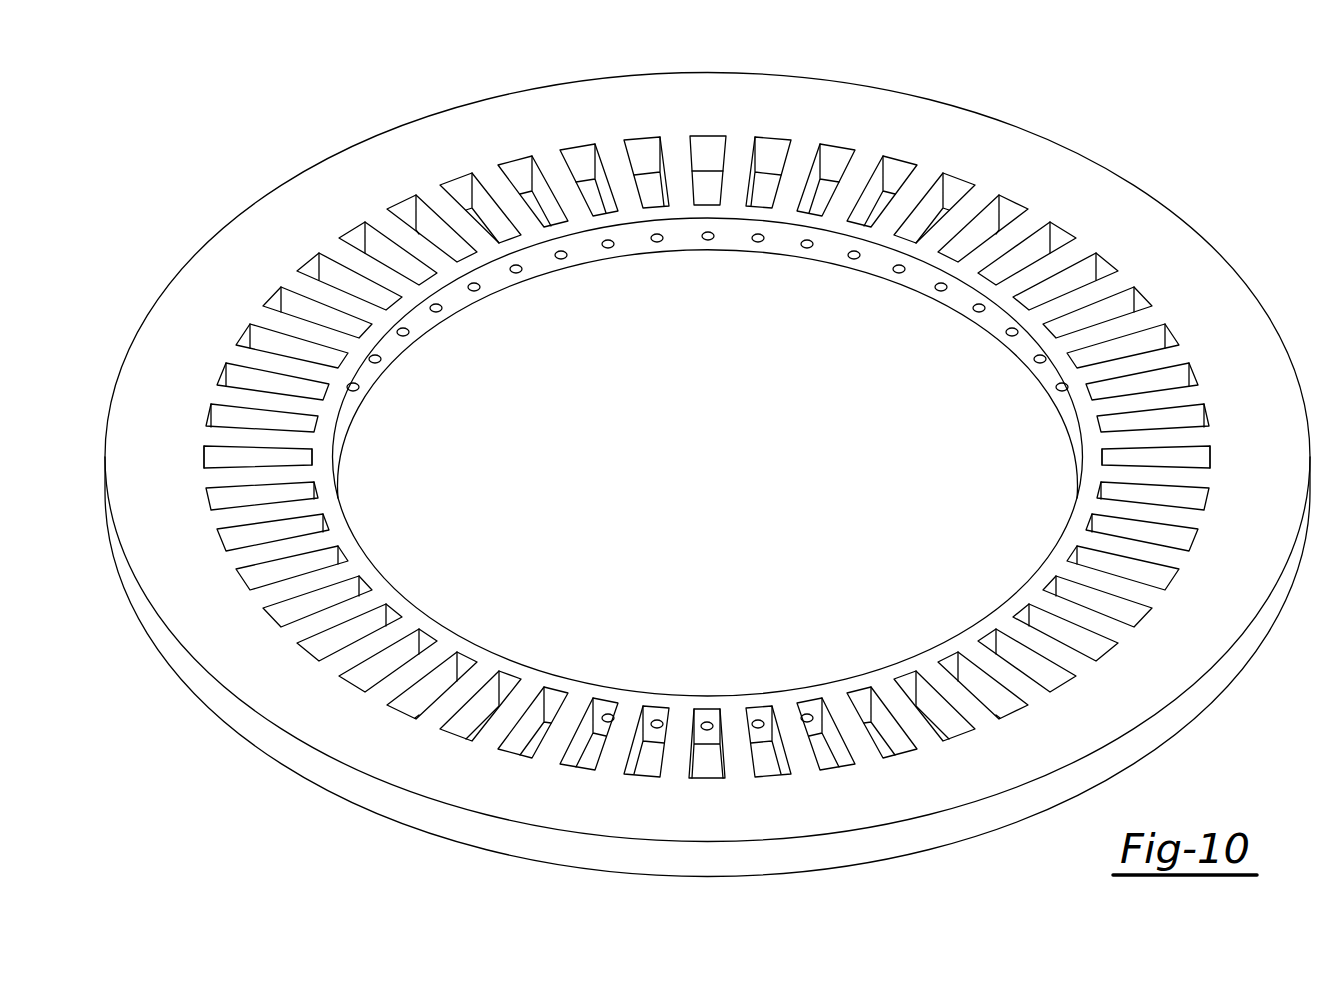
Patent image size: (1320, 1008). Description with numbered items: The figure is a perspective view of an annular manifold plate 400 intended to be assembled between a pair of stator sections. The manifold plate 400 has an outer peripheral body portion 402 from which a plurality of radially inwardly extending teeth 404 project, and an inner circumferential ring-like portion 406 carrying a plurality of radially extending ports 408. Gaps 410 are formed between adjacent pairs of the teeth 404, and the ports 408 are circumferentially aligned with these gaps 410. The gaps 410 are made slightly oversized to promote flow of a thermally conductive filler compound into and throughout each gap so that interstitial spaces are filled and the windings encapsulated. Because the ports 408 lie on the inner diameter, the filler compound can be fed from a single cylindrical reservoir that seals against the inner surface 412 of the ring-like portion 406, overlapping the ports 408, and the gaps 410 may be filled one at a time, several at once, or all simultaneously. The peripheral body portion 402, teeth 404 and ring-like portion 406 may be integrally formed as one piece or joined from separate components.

The annular manifold plate 400 is at (700, 460).
The outer peripheral body portion 402 is at (707, 475).
The radially inwardly extending teeth 404 is at (707, 410).
The inner circumferential ring-like portion 406 is at (782, 243).
The radially extending ports 408 is at (658, 238).
The gaps 410 is at (478, 220).
The inner surface 412 is at (499, 277).